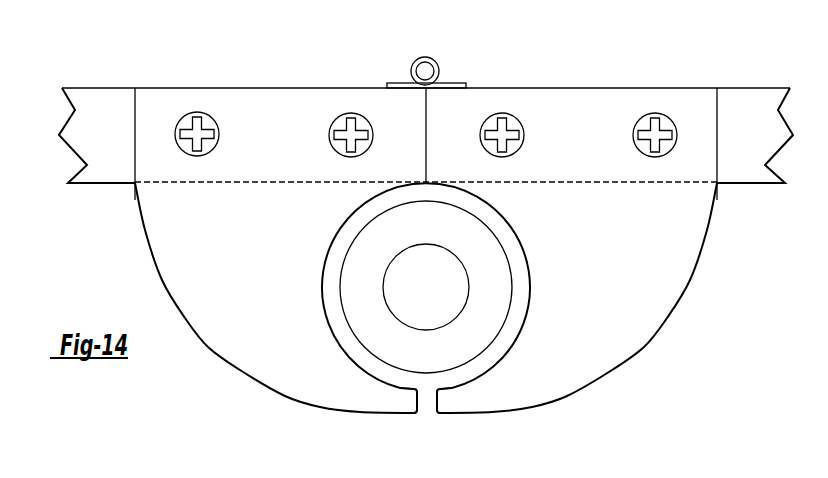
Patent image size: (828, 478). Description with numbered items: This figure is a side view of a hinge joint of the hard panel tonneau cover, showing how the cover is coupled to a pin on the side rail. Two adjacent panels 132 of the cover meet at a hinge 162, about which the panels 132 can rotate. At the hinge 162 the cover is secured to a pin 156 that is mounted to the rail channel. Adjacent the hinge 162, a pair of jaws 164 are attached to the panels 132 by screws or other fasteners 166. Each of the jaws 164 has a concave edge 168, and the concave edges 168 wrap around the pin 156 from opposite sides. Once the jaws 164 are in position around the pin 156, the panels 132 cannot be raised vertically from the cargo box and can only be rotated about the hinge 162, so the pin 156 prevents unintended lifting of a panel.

The panels 132 is at (95, 105).
The pin 156 is at (502, 319).
The hinge 162 is at (432, 58).
The jaws 164 is at (208, 347).
The fasteners 166 is at (347, 114).
The concave edge 168 is at (326, 304).